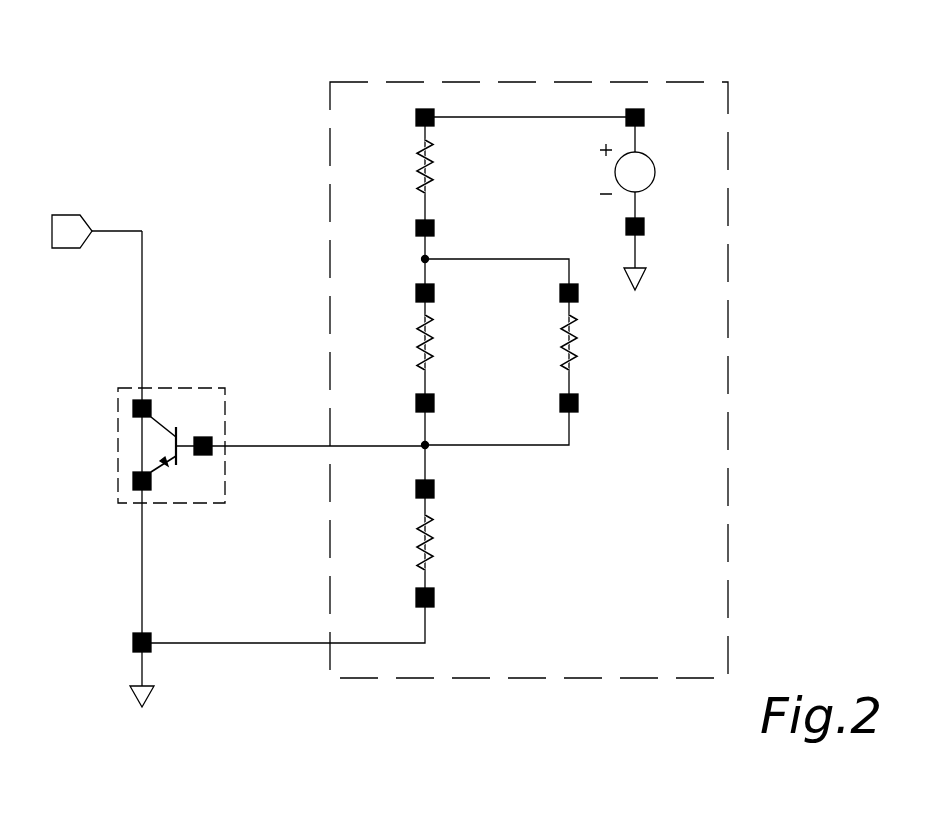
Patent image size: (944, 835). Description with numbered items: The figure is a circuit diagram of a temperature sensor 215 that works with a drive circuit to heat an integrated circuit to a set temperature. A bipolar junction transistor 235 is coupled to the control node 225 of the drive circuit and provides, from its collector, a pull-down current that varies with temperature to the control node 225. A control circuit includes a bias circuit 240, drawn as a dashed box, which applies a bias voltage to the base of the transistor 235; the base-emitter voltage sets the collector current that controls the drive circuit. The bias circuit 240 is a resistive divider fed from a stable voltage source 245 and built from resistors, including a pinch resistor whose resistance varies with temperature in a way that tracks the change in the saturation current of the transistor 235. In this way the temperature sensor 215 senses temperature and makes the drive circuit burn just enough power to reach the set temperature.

The temperature sensor 215 is at (780, 43).
The control node 225 is at (65, 214).
The bipolar junction transistor 235 is at (172, 388).
The bias circuit 240 is at (517, 82).
The stable voltage VDC 245 is at (655, 172).